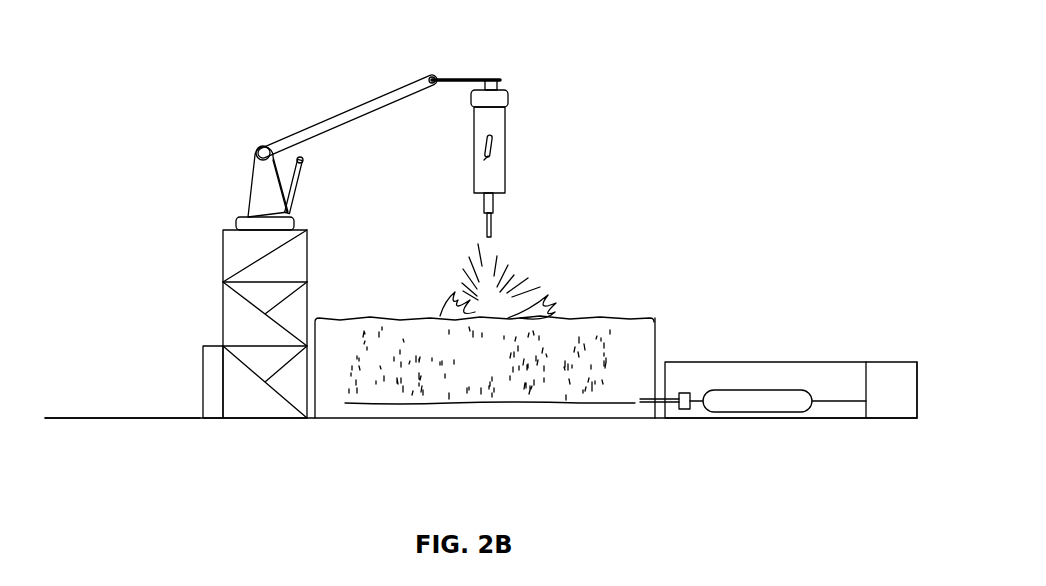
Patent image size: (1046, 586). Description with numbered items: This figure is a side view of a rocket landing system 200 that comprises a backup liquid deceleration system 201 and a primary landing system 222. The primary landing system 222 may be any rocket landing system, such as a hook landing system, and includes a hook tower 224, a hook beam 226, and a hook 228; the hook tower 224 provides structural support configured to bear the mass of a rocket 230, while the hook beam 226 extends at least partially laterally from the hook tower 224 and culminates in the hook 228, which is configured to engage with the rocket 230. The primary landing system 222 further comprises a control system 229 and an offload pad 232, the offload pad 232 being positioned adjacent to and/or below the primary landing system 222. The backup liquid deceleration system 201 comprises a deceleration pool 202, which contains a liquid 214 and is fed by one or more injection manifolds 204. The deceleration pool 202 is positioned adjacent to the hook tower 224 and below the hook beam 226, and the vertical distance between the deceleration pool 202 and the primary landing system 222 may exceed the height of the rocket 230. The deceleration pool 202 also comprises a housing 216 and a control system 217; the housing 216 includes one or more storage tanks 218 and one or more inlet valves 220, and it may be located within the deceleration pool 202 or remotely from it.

The rocket landing system 200 is at (136, 26).
The backup liquid deceleration system 201 is at (753, 208).
The deceleration pool 202 is at (601, 292).
The injection manifold 204 is at (371, 430).
The liquid 214 is at (504, 368).
The housing 216 is at (638, 337).
The control system 217 is at (883, 362).
The storage tank 218 is at (762, 412).
The inlet valve 220 is at (682, 411).
The primary landing system 222 is at (212, 193).
The hook tower 224 is at (222, 300).
The hook beam 226 is at (365, 104).
The hook 228 is at (478, 78).
The control system 229 is at (203, 350).
The rocket 230 is at (503, 148).
The offload pad 232 is at (118, 418).